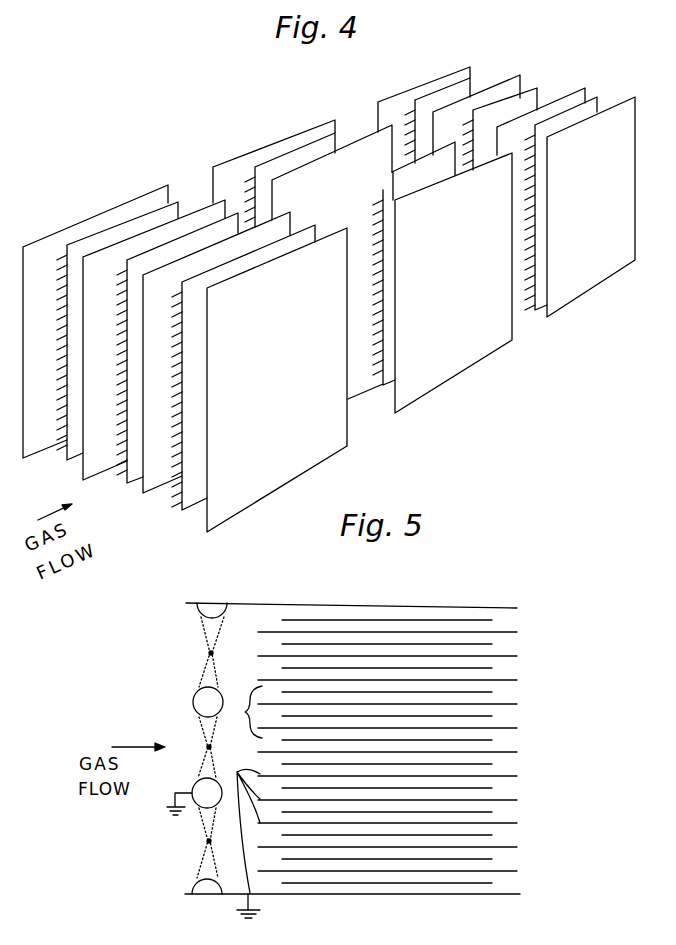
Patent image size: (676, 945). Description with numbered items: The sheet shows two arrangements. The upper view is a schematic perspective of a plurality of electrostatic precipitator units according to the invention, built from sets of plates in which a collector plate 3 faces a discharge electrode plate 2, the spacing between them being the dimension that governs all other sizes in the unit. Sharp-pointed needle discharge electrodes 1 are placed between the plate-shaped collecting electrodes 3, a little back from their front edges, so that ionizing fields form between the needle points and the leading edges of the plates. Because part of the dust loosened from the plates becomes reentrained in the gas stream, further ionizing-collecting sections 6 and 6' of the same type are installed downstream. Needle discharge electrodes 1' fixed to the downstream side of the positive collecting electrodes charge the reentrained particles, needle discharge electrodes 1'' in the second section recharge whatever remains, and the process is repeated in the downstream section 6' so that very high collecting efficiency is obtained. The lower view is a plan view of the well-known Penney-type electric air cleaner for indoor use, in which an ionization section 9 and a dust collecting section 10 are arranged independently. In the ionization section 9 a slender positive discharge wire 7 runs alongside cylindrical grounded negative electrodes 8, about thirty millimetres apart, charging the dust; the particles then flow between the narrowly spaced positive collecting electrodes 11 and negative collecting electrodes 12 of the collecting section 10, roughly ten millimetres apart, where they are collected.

In FIG. 4, the needle discharge electrode 1 is at (95, 341).
In FIG. 4, the needle discharge electrode 1' is at (282, 173).
In FIG. 4, the needle discharge electrode 1'' is at (430, 302).
In FIG. 4, the discharge electrode plate 2 is at (180, 242).
In FIG. 4, the collecting electrode 3 is at (153, 488).
In FIG. 4, the ionizing-collecting section 6 is at (251, 120).
In FIG. 4, the ionizing-collecting section 6' is at (401, 68).
In FIG. 5, the positive discharge electrode 7 is at (208, 654).
In FIG. 5, the grounded negative electrode 8 is at (193, 700).
In FIG. 5, the ionization section 9 is at (230, 585).
In FIG. 5, the dust collecting section 10 is at (517, 585).
In FIG. 5, the positive collecting electrode 11 is at (245, 712).
In FIG. 5, the negative collecting electrode 12 is at (240, 822).